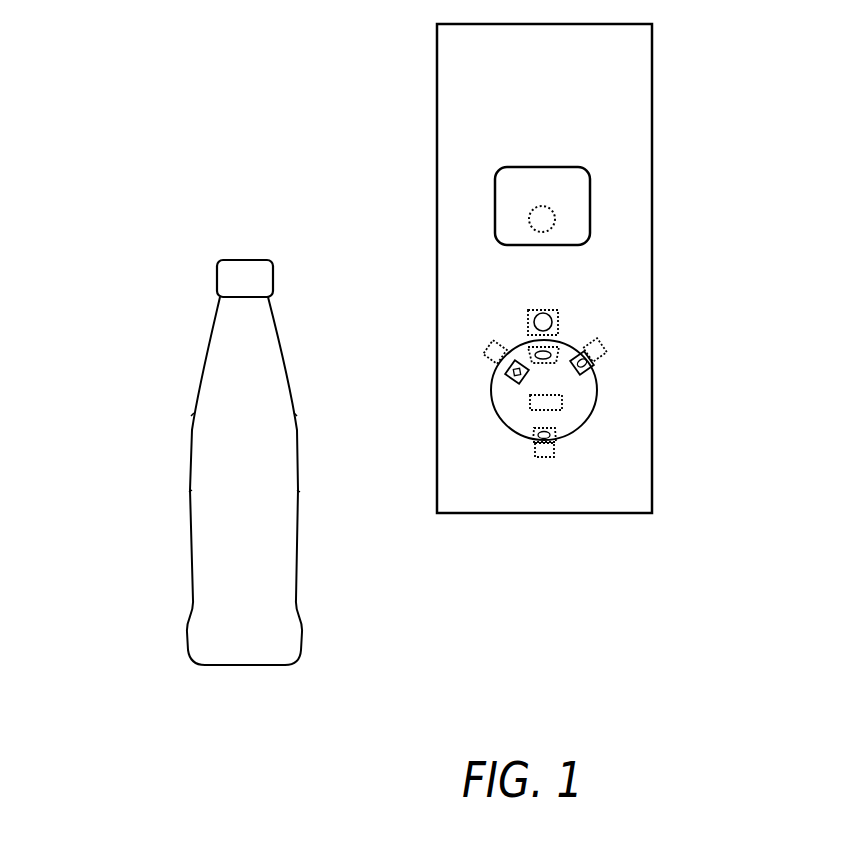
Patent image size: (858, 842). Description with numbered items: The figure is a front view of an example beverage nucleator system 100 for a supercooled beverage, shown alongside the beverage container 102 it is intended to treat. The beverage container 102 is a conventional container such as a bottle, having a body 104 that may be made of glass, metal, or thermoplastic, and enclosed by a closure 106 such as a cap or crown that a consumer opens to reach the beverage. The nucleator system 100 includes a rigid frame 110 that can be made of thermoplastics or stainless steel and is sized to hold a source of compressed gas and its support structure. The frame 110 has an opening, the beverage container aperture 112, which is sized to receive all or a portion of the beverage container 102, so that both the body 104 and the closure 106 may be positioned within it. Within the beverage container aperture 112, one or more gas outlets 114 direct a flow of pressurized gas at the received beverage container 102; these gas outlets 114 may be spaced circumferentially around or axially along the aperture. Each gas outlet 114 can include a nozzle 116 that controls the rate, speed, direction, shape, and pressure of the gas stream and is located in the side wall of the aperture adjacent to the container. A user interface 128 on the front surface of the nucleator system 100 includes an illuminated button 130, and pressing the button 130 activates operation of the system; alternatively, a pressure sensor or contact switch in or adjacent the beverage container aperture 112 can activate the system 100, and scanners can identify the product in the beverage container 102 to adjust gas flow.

The beverage nucleator system 100 is at (372, 170).
The beverage container 102 is at (172, 481).
The body 104 is at (210, 565).
The closure 106 is at (238, 283).
The frame 110 is at (652, 222).
The beverage container aperture 112 is at (597, 410).
The gas outlet 114 is at (690, 565).
The nozzle 116 is at (528, 346).
The user interface 128 is at (588, 182).
The illuminated button 130 is at (556, 226).